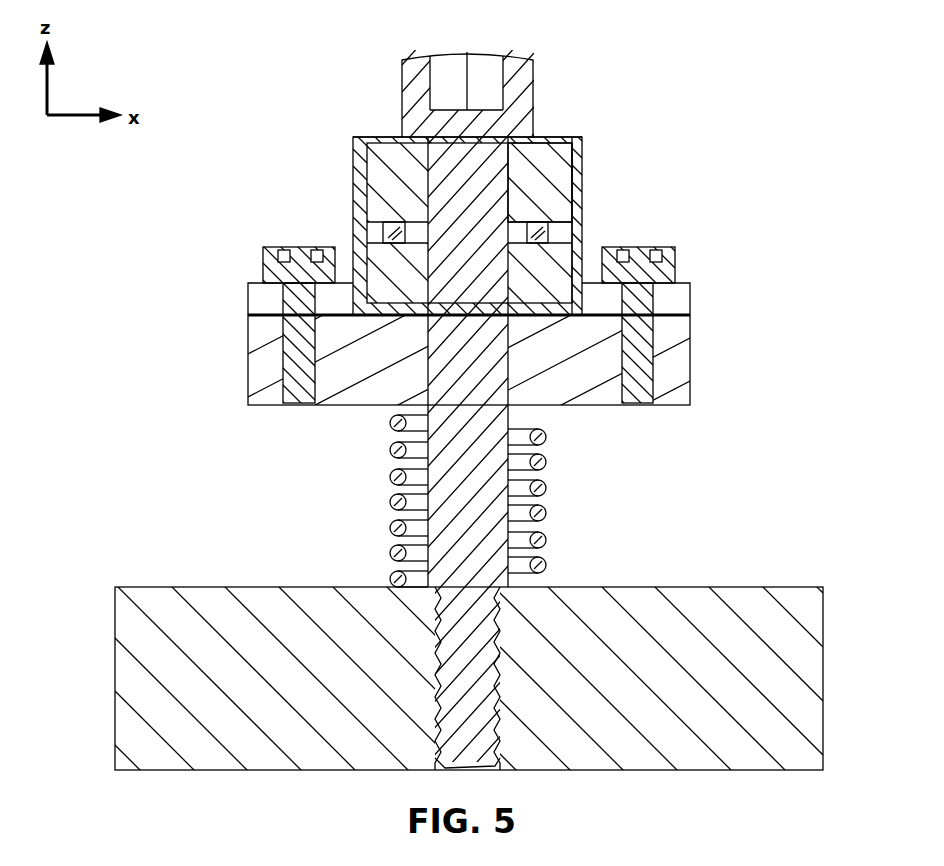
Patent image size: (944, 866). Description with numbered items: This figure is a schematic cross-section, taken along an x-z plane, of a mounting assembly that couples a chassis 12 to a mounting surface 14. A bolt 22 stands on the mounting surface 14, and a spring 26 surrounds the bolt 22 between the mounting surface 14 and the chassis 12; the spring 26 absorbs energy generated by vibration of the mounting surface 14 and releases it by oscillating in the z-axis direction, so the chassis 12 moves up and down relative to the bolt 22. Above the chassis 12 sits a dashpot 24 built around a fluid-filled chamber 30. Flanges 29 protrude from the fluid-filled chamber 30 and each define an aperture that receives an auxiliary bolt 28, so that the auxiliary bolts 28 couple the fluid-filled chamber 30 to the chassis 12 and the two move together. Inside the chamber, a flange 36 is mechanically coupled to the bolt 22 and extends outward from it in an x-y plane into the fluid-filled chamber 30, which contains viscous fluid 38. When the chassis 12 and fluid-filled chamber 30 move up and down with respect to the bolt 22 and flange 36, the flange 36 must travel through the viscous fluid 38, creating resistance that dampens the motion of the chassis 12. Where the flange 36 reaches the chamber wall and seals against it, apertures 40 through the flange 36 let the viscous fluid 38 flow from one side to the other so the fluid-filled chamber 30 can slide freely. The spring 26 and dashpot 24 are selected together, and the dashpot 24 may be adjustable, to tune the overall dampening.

The chassis 12 is at (678, 363).
The mounting surface 14 is at (793, 592).
The bolt 22 is at (518, 85).
The dashpot 24 is at (369, 126).
The spring 26 is at (550, 490).
The auxiliary bolt 28 is at (637, 252).
The flange 29 is at (677, 302).
The fluid-filled chamber 30 is at (572, 140).
The flange 36 is at (548, 225).
The viscous fluid 38 is at (556, 178).
The aperture 40 is at (395, 222).